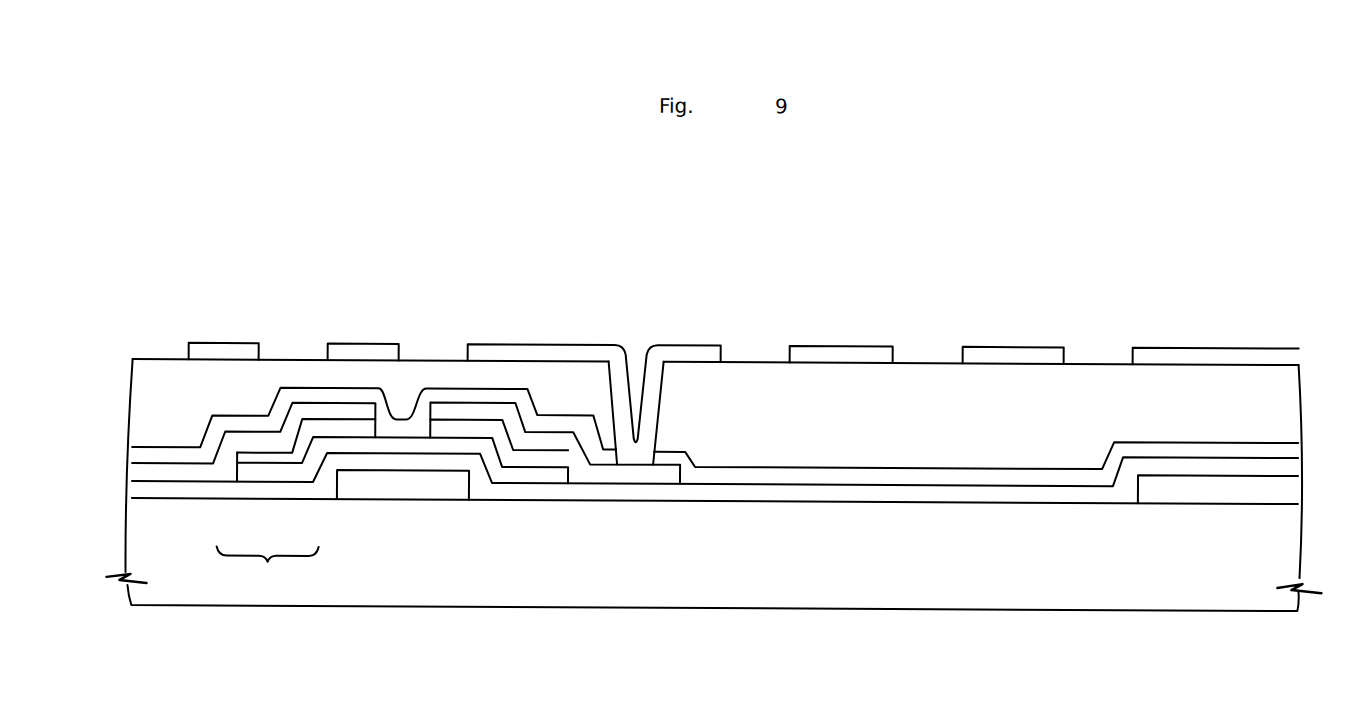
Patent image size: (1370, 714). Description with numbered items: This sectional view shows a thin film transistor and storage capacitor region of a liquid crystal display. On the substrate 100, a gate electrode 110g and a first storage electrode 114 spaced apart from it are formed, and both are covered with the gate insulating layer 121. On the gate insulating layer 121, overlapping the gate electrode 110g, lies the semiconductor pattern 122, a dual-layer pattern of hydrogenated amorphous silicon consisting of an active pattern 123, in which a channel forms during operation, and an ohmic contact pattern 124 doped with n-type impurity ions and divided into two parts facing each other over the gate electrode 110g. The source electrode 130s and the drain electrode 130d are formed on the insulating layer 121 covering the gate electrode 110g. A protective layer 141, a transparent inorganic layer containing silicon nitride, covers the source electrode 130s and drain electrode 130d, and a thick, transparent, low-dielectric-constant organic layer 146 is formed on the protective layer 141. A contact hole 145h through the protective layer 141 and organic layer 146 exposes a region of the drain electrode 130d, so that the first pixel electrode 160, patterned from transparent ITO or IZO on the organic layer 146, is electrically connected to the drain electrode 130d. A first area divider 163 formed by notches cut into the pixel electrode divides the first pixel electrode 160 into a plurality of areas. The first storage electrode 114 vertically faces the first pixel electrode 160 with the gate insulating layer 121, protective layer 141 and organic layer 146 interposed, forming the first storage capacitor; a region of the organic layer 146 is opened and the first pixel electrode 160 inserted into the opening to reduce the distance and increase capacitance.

The substrate 100 is at (1285, 551).
The first storage electrode 114 is at (1285, 487).
The gate electrode 110g is at (406, 485).
The gate insulating layer 121 is at (1285, 462).
The semiconductor pattern 122 is at (267, 568).
The active pattern 123 is at (297, 474).
The ohmic contact pattern 124 is at (255, 458).
The source electrode 130s is at (143, 473).
The drain electrode 130d is at (602, 472).
The protective layer 141 is at (143, 455).
The contact hole 145h is at (614, 392).
The organic layer 146 is at (143, 409).
The first pixel electrode 160 is at (225, 351).
The first area divider 163 is at (301, 341).